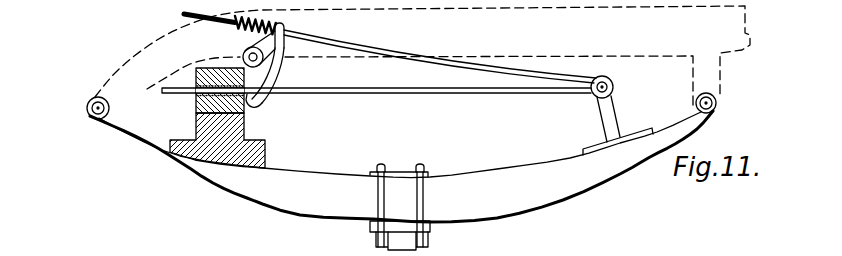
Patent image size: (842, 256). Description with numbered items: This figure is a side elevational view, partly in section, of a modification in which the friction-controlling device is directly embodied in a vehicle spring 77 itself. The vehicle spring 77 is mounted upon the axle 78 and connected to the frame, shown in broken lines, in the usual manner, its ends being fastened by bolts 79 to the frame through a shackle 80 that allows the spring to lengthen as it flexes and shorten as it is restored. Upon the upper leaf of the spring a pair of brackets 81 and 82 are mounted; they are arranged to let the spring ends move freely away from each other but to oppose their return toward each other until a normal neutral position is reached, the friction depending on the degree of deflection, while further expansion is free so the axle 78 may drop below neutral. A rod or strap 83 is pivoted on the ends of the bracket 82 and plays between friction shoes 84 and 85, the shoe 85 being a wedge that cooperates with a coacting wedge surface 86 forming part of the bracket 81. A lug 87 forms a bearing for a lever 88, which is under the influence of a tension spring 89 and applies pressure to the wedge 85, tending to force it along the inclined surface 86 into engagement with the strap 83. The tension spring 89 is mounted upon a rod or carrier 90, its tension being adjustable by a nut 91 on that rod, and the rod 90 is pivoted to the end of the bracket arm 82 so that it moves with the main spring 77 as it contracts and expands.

The vehicle spring 77 is at (474, 183).
The axle 78 is at (403, 239).
The bolts 79 is at (108, 106).
The shackle 80 is at (714, 83).
The bracket 81 is at (245, 132).
The bracket 82 is at (613, 107).
The rod or strap 83 is at (465, 94).
The friction shoe 84 is at (414, 81).
The wedge friction shoe 85 is at (259, 107).
The wedge surface 86 is at (194, 111).
The lug 87 is at (281, 67).
The lever 88 is at (278, 52).
The tension spring 89 is at (268, 20).
The rod or carrier 90 is at (377, 52).
The nut 91 is at (232, 17).